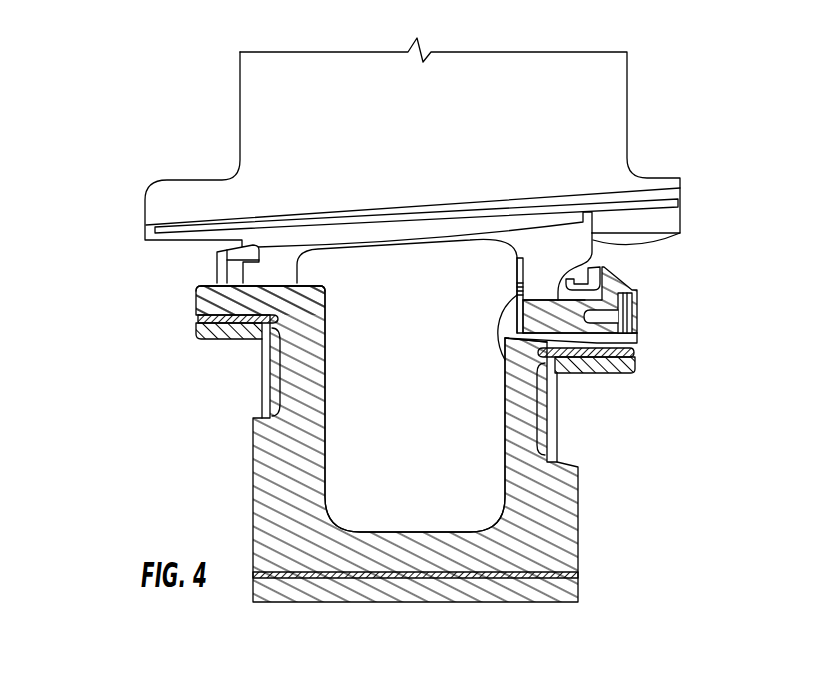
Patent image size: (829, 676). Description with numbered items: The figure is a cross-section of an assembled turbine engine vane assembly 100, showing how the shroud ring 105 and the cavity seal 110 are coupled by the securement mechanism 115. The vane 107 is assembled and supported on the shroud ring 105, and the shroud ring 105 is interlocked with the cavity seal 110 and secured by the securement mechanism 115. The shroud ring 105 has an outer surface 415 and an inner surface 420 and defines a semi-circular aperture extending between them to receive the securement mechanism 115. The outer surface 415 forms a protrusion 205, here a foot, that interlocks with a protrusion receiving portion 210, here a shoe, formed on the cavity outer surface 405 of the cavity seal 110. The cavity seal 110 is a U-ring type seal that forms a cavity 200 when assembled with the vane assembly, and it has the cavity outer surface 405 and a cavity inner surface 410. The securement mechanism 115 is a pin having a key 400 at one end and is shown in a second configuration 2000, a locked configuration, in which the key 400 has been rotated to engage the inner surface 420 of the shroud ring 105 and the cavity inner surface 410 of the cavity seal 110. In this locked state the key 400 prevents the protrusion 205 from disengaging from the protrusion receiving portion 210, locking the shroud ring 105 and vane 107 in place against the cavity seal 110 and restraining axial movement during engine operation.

The turbine engine vane assembly 100 is at (140, 130).
The shroud ring 105 is at (170, 198).
The vane 107 is at (613, 68).
The cavity seal 110 is at (263, 467).
The securement mechanism 115 is at (628, 315).
The cavity 200 is at (358, 368).
The protrusion 205 is at (263, 273).
The protrusion receiving portion 210 is at (237, 253).
The key 400 is at (512, 352).
The cavity outer surface 405 is at (634, 360).
The cavity inner surface 410 is at (505, 360).
The outer surface 415 is at (597, 248).
The inner surface 420 is at (525, 262).
The second configuration 2000 is at (645, 551).